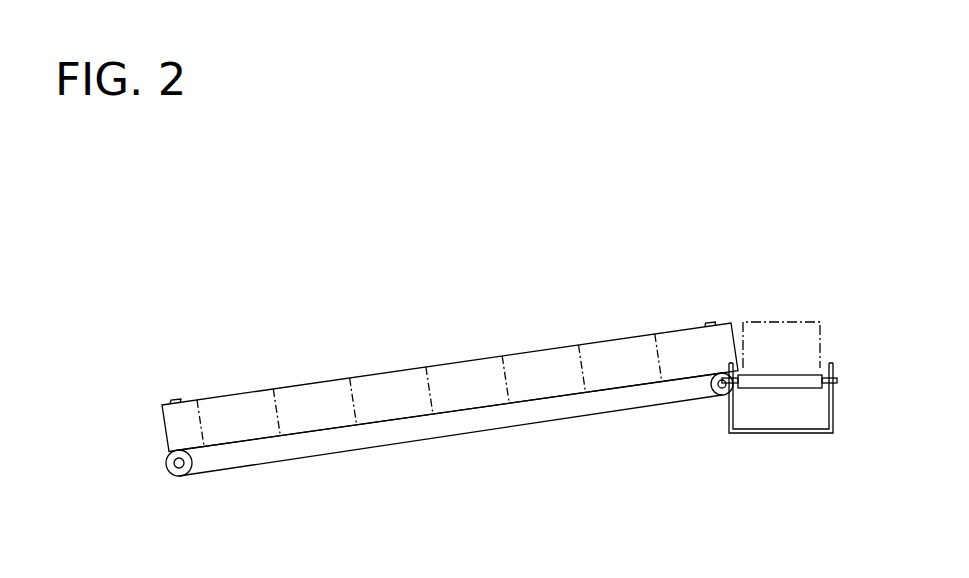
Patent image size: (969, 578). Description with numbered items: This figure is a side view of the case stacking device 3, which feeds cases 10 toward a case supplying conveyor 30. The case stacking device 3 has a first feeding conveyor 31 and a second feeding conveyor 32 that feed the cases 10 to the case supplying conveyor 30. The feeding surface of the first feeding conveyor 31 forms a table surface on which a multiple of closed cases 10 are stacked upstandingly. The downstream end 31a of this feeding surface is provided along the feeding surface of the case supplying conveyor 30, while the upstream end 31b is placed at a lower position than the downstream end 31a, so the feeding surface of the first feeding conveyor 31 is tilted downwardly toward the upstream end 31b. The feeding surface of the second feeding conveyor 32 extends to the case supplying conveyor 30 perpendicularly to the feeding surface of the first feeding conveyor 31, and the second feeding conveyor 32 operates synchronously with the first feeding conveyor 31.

The case stacking device 3 is at (413, 300).
The case 10 is at (613, 342).
The case supplying conveyor 30 is at (797, 386).
The first feeding conveyor 31 is at (473, 435).
The downstream end 31a is at (735, 389).
The upstream end 31b is at (165, 470).
The second feeding conveyor 32 is at (237, 392).